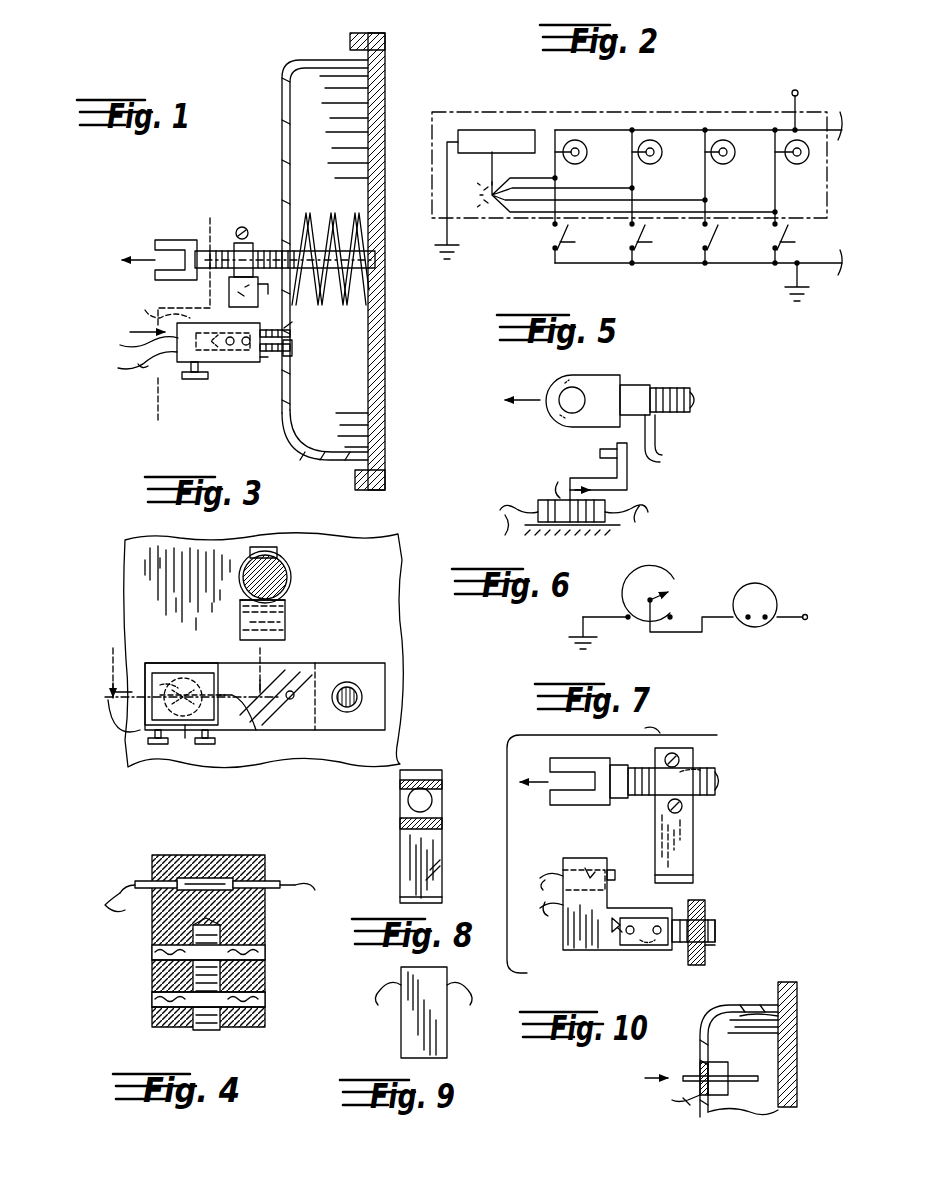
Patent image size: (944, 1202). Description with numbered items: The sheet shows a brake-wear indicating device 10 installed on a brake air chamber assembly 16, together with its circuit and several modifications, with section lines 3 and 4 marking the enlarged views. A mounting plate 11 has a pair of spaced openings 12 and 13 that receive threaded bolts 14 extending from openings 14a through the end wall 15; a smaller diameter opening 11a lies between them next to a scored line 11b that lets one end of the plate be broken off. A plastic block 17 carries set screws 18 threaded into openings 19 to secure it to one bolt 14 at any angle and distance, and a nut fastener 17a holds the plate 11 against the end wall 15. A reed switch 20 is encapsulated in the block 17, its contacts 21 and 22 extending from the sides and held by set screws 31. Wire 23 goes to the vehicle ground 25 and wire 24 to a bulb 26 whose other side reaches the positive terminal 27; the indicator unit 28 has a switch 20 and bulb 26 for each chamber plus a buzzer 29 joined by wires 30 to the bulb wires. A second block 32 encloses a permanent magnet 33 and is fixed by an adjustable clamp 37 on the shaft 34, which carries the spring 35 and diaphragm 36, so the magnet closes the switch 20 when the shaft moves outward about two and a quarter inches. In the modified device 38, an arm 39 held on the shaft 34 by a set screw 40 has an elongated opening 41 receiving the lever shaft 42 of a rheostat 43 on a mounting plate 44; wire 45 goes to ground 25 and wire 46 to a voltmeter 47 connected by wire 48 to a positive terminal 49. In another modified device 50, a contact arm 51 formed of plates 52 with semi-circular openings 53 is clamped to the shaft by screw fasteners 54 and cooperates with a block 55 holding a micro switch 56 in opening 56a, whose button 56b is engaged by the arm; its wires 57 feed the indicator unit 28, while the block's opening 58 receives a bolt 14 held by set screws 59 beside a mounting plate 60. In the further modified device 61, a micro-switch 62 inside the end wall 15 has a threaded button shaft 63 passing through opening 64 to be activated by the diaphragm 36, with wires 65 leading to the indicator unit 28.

In FIG. 1, the section line 3— 3 is at (153, 388).
In FIG. 3, the section line 4— 4 is at (196, 671).
In FIG. 1, the device 10 is at (210, 414).
In FIG. 1, the mounting plate 11 is at (275, 376).
In FIG. 3, the mounting plate 11 is at (340, 661).
In FIG. 3, the smaller diameter opening 11a is at (292, 691).
In FIG. 3, the scored line 11b is at (330, 732).
In FIG. 3, the opening 12 is at (180, 680).
In FIG. 3, the opening 13 is at (342, 719).
In FIG. 1, the threaded bolt 14 is at (292, 350).
In FIG. 3, the threaded bolt 14 is at (190, 740).
In FIG. 4, the threaded bolt 14 is at (202, 1032).
In FIG. 7, the threaded bolt 14 is at (661, 957).
In FIG. 1, the opening 14a is at (292, 334).
In FIG. 1, the end wall 15 is at (283, 138).
In FIG. 7, the end wall 15 is at (713, 961).
In FIG. 10, the end wall 15 is at (700, 1042).
In FIG. 1, the air chamber assembly 16 is at (280, 90).
In FIG. 10, the air chamber assembly 16 is at (699, 1114).
In FIG. 1, the block 17 is at (240, 364).
In FIG. 3, the block 17 is at (206, 666).
In FIG. 4, the block 17 is at (268, 934).
In FIG. 1, the nut fastener 17a is at (266, 364).
In FIG. 3, the nut fastener 17a is at (162, 682).
In FIG. 7, the nut fastener 17a is at (691, 959).
In FIG. 1, the set screw 18 is at (241, 372).
In FIG. 4, the set screw 18 is at (252, 1016).
In FIG. 4, the opening 19 is at (152, 1016).
In FIG. 1, the reed switch 20 is at (188, 320).
In FIG. 2, the reed switch 20 is at (691, 237).
In FIG. 4, the reed switch 20 is at (216, 878).
In FIG. 2, the contact 21 is at (785, 252).
In FIG. 3, the contact 21 is at (125, 690).
In FIG. 4, the contact 21 is at (136, 884).
In FIG. 2, the contact 22 is at (768, 231).
In FIG. 3, the contact 22 is at (234, 697).
In FIG. 4, the contact 22 is at (282, 884).
In FIG. 1, the wire 23 is at (142, 343).
In FIG. 2, the wire 23 is at (572, 265).
In FIG. 3, the wire 23 is at (250, 727).
In FIG. 4, the wire 23 is at (309, 896).
In FIG. 1, the wire 24 is at (142, 362).
In FIG. 2, the wire 24 is at (777, 202).
In FIG. 3, the wire 24 is at (130, 737).
In FIG. 4, the wire 24 is at (119, 914).
In FIG. 2, the ground 25 is at (782, 294).
In FIG. 6, the ground 25 is at (598, 646).
In FIG. 2, the bulb 26 is at (728, 165).
In FIG. 2, the positive terminal 27 is at (791, 94).
In FIG. 2, the indicator unit 28 is at (650, 112).
In FIG. 2, the buzzer 29 is at (520, 130).
In FIG. 2, the wire 30 is at (485, 212).
In FIG. 1, the set screw 31 is at (197, 380).
In FIG. 3, the set screw 31 is at (215, 744).
In FIG. 4, the set screw 31 is at (258, 878).
In FIG. 1, the second block 32 is at (263, 295).
In FIG. 3, the second block 32 is at (292, 604).
In FIG. 1, the permanent magnet 33 is at (240, 302).
In FIG. 3, the permanent magnet 33 is at (292, 629).
In FIG. 1, the shaft 34 is at (216, 251).
In FIG. 3, the shaft 34 is at (242, 581).
In FIG. 5, the shaft 34 is at (684, 393).
In FIG. 7, the shaft 34 is at (650, 798).
In FIG. 1, the spring 35 is at (346, 222).
In FIG. 1, the diaphragm 36 is at (380, 300).
In FIG. 10, the diaphragm 36 is at (799, 1034).
In FIG. 1, the adjustable clamp 37 is at (245, 236).
In FIG. 3, the adjustable clamp 37 is at (288, 576).
In FIG. 5, the modified device 38 is at (702, 444).
In FIG. 5, the arm 39 is at (665, 456).
In FIG. 5, the set screw 40 is at (646, 391).
In FIG. 5, the elongated opening 41 is at (645, 471).
In FIG. 5, the lever shaft 42 is at (605, 466).
In FIG. 5, the rheostat 43 is at (540, 493).
In FIG. 6, the rheostat 43 is at (681, 578).
In FIG. 5, the mounting plate 44 is at (625, 523).
In FIG. 5, the wire 45 is at (509, 526).
In FIG. 6, the wire 45 is at (613, 613).
In FIG. 5, the wire 46 is at (650, 509).
In FIG. 6, the wire 46 is at (693, 636).
In FIG. 6, the voltmeter 47 is at (769, 591).
In FIG. 6, the wire 48 is at (789, 629).
In FIG. 6, the positive terminal 49 is at (806, 629).
In FIG. 7, the modified device 50 is at (746, 801).
In FIG. 7, the contact arm 51 is at (699, 850).
In FIG. 8, the contact arm 51 is at (446, 870).
In FIG. 7, the plate 52 is at (696, 877).
In FIG. 8, the plate 52 is at (443, 899).
In FIG. 7, the semi-circular opening 53 is at (686, 779).
In FIG. 8, the semi-circular opening 53 is at (435, 806).
In FIG. 7, the screw fastener 54 is at (684, 809).
In FIG. 8, the screw fastener 54 is at (403, 826).
In FIG. 7, the block 55 is at (591, 955).
In FIG. 9, the block 55 is at (451, 1030).
In FIG. 7, the micro switch 56 is at (581, 858).
In FIG. 7, the opening 56a is at (606, 863).
In FIG. 7, the button 56b is at (618, 871).
In FIG. 7, the wire 57 is at (551, 917).
In FIG. 9, the wire 57 is at (386, 1002).
In FIG. 7, the opening 58 is at (646, 948).
In FIG. 7, the set screw 59 is at (659, 926).
In FIG. 7, the mounting plate 60 is at (699, 901).
In FIG. 10, the modified device 61 is at (641, 1068).
In FIG. 10, the micro-switch 62 is at (723, 1070).
In FIG. 10, the button shaft 63 is at (759, 1080).
In FIG. 10, the opening 64 is at (700, 1067).
In FIG. 10, the wire 65 is at (676, 1097).